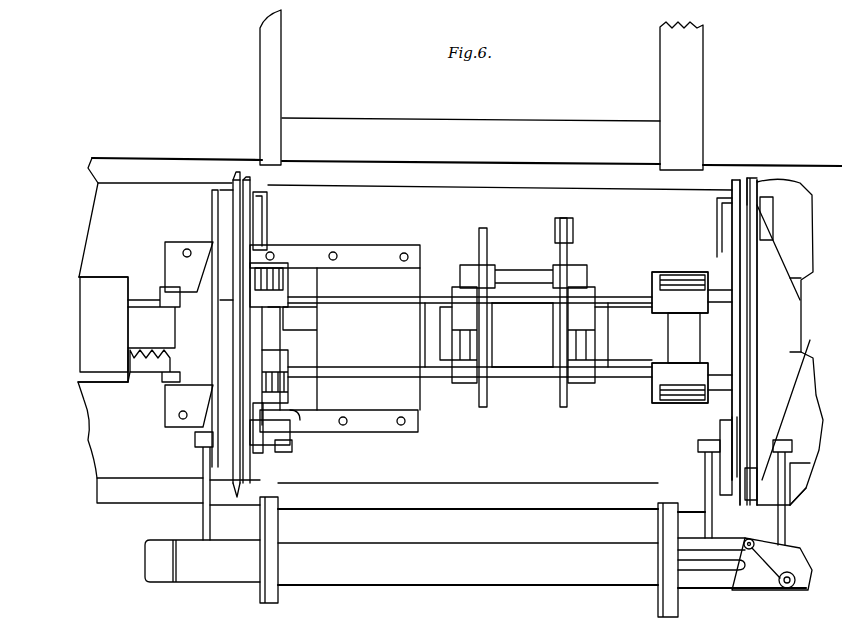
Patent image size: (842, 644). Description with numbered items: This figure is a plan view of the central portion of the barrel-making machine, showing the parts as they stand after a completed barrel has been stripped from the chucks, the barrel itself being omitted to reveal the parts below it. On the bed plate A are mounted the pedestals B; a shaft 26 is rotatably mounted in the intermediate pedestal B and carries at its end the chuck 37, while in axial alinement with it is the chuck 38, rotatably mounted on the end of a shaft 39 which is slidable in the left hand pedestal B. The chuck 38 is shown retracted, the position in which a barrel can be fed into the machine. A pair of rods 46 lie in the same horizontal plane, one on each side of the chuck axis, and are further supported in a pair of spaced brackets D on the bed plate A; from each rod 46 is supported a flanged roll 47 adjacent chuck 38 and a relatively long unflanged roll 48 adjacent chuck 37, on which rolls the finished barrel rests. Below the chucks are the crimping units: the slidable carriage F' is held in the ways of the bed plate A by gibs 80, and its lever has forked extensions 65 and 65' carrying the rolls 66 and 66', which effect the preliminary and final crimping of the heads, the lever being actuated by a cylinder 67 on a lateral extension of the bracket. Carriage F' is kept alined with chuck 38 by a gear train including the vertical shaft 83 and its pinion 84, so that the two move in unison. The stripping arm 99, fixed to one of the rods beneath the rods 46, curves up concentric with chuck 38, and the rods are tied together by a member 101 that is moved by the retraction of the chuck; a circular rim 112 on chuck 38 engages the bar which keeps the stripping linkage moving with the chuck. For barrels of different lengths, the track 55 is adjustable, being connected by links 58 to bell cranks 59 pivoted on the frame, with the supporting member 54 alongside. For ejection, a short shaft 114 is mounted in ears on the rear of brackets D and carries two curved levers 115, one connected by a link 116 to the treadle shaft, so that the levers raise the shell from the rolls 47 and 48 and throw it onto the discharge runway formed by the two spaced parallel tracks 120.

The tracks 120 is at (274, 96).
The roll 66' is at (500, 320).
The forked extension 65' is at (282, 221).
The flanged roll 47 is at (272, 268).
The gibs 80 is at (374, 256).
The chuck 38 is at (213, 225).
The shaft 39 is at (143, 327).
The pedestal B is at (103, 329).
The shaft 83 is at (150, 366).
The pinion 84 is at (140, 372).
The member 101 is at (160, 386).
The circular rim 112 is at (202, 410).
The arm 99 is at (252, 425).
The cylinder 67 is at (287, 442).
The forked extension 65 is at (529, 353).
The roll 66 is at (489, 500).
The disc and bar 54 is at (280, 592).
The track 55 is at (665, 605).
The links 58 is at (723, 550).
The bell cranks 59 is at (782, 574).
The levers 115 is at (485, 250).
The link 116 is at (573, 228).
The shaft 114 is at (590, 282).
The rods 46 is at (525, 372).
The unflanged roll 48 is at (648, 437).
The chuck 37 is at (777, 341).
The shaft 26 is at (813, 352).
The brackets D is at (462, 385).
The slidable bracket or carriage F' is at (497, 339).
The bed plate A is at (596, 457).